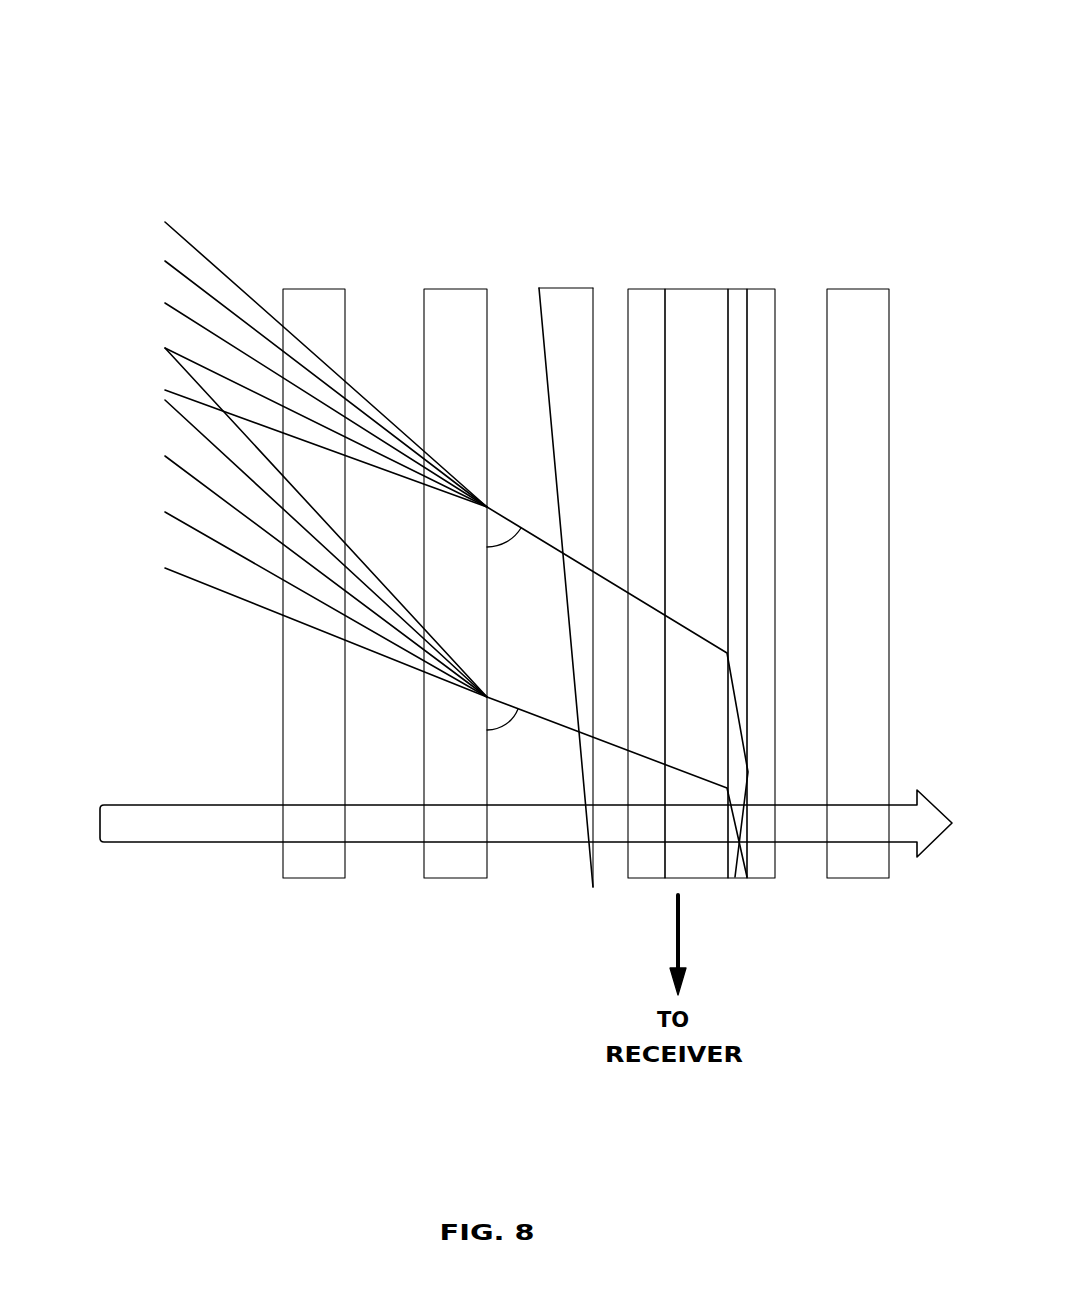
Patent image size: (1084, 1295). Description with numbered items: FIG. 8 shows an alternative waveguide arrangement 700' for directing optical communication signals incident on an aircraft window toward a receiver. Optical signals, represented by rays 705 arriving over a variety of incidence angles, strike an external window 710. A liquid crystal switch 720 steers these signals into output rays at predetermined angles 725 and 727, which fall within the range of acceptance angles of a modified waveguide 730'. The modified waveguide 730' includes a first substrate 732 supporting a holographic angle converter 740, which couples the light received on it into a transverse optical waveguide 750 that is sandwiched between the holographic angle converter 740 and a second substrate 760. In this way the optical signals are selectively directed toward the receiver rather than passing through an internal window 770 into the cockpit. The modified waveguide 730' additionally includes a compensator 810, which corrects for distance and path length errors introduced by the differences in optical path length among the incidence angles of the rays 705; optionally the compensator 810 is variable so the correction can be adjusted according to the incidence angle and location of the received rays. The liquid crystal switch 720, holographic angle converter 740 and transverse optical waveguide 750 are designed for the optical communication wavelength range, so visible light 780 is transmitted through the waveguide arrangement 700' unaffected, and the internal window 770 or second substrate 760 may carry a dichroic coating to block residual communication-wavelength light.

The waveguide arrangement 700' is at (526, 445).
The rays 705 is at (145, 192).
The external window 710 is at (302, 288).
The liquid crystal switch 720 is at (451, 288).
The predetermined angle 725 is at (508, 545).
The predetermined angle 727 is at (502, 728).
The modified waveguide 730' is at (656, 502).
The first substrate 732 is at (647, 289).
The holographic angle converter 740 is at (697, 878).
The transverse optical waveguide 750 is at (737, 289).
The second substrate 760 is at (768, 878).
The internal window 770 is at (889, 330).
The visible light 780 is at (197, 805).
The compensator 810 is at (560, 288).